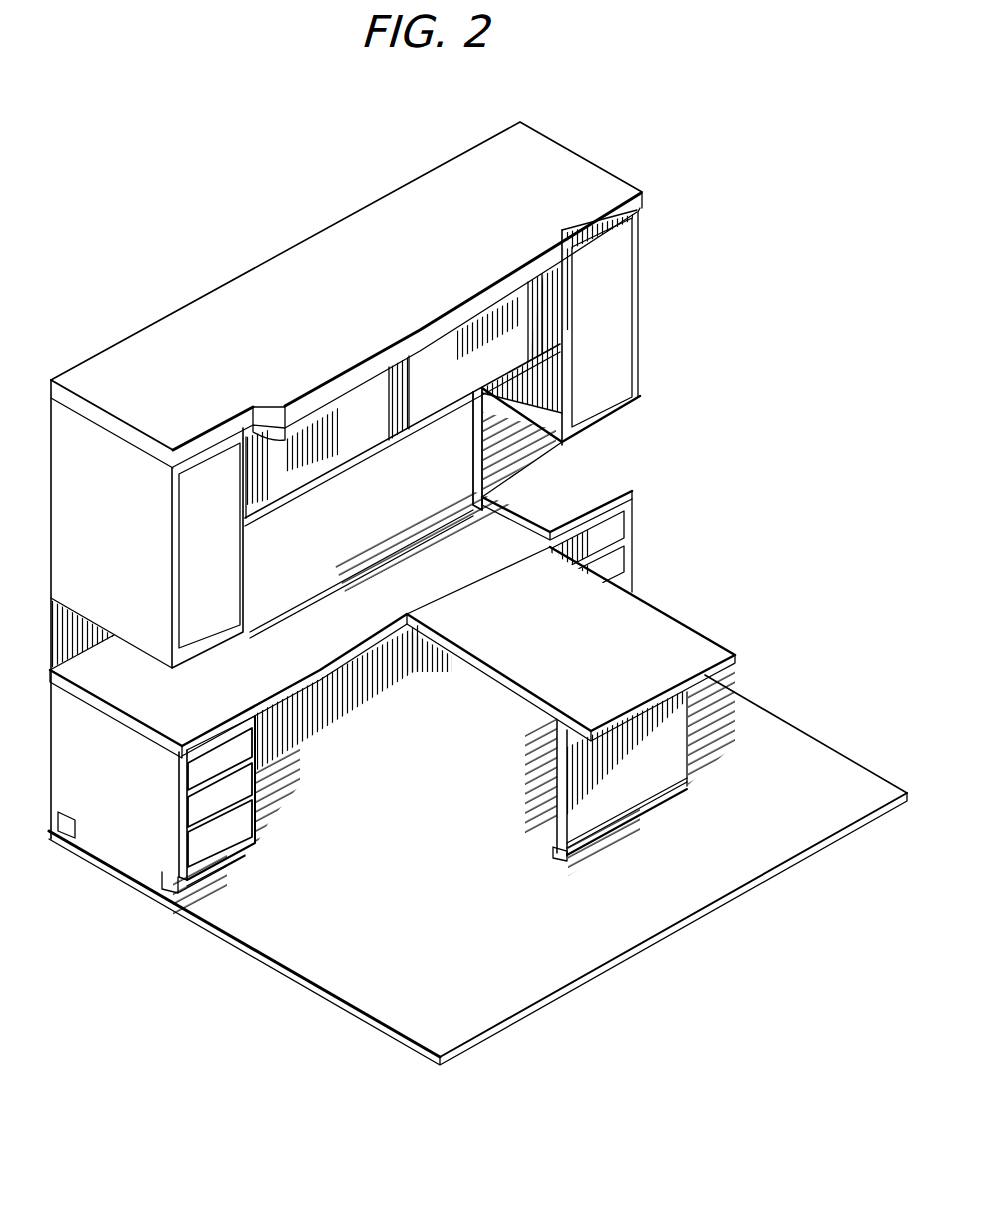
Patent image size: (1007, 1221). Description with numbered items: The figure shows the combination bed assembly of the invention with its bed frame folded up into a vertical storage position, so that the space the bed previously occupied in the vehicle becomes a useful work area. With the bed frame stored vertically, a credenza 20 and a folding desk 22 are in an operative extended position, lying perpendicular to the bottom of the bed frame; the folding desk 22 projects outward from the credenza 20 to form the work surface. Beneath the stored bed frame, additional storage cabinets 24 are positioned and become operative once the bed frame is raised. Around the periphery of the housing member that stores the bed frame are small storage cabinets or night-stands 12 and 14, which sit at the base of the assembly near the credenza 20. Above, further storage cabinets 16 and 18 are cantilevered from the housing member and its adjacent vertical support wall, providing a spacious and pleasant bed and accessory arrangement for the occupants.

The night-stand 12 is at (156, 826).
The night-stand 14 is at (616, 508).
The storage cabinet 16 is at (172, 481).
The storage cabinet 18 is at (599, 326).
The credenza 20 is at (251, 692).
The folding desk 22 is at (594, 690).
The storage cabinets 24 is at (317, 406).